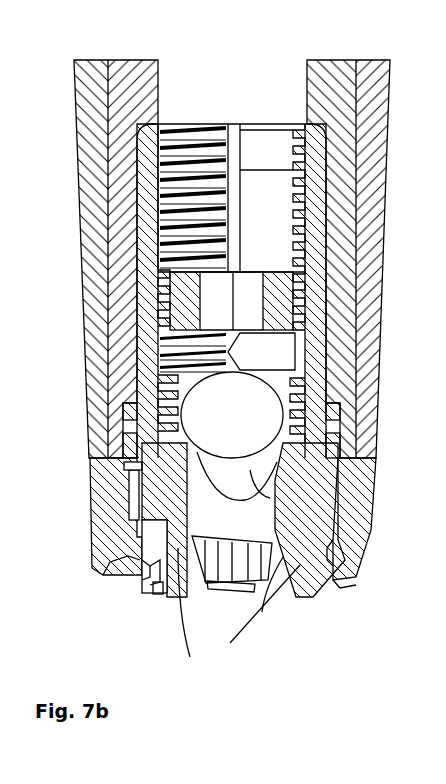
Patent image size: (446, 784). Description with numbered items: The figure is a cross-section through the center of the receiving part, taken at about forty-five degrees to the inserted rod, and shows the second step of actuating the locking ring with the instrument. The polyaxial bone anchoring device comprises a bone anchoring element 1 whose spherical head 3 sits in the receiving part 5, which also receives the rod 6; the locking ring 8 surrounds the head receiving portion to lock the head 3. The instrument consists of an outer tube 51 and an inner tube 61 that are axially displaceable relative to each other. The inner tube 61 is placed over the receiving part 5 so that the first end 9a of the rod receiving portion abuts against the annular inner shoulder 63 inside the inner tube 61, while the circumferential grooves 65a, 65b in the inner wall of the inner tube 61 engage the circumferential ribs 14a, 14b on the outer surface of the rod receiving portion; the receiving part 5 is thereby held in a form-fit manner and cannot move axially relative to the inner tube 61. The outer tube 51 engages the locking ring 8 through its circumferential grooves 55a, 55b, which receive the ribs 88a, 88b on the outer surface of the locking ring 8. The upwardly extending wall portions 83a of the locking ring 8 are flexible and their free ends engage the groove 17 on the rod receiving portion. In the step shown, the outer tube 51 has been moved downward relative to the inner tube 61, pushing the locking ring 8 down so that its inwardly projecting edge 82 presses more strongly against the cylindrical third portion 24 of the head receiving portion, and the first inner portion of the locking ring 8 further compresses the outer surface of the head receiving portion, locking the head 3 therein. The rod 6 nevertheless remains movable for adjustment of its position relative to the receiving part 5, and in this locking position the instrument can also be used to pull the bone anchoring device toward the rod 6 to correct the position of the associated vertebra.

The bone anchoring element 1 is at (258, 636).
The head 3 is at (268, 588).
The receiving part 5 is at (308, 497).
The rod 6 is at (200, 449).
The locking ring 8 is at (143, 572).
The first end 9a is at (180, 122).
The circumferential rib 14a is at (127, 408).
The circumferential rib 14b is at (445, 372).
The groove 17 is at (120, 462).
The third portion 24 is at (175, 595).
The outer tube 51 is at (90, 163).
The groove 55a is at (135, 574).
The groove 55b is at (336, 560).
The inner tube 61 is at (125, 200).
The inner shoulder 63 is at (150, 122).
The groove 65a is at (130, 417).
The groove 65b is at (341, 418).
The inwardly projecting edge 82 is at (157, 595).
The upwardly extending wall portion 83a is at (135, 490).
The rib 88a is at (132, 558).
The rib 88b is at (333, 565).